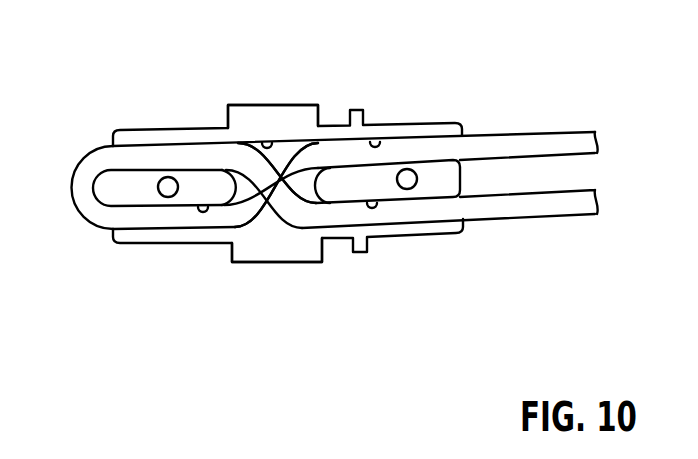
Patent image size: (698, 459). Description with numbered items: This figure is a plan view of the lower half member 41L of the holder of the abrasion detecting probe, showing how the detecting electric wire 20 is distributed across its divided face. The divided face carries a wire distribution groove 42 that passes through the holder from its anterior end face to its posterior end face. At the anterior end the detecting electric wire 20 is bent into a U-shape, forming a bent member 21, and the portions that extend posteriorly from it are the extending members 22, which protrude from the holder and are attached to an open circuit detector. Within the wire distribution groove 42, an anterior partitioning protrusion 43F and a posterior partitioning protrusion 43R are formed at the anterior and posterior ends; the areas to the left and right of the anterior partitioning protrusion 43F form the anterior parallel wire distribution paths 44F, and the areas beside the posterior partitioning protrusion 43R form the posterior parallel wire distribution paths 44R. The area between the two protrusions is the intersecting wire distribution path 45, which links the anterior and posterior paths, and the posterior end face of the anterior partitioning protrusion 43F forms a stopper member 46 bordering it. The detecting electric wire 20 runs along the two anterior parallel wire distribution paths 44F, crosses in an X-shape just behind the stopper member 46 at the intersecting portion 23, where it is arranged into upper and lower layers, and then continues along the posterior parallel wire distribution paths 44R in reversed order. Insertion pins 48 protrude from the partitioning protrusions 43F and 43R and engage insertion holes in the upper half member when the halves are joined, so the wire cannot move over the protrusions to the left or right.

The detecting electric wire 20 is at (582, 90).
The bent member 21 is at (78, 187).
The extending members 22 is at (538, 143).
The intersecting portion 23 is at (272, 183).
The lower half member 41L is at (295, 243).
The wire distribution groove 42 is at (275, 140).
The anterior partitioning protrusion 43F is at (115, 192).
The posterior partitioning protrusion 43R is at (433, 183).
The anterior parallel wire distribution path 44F is at (213, 188).
The posterior parallel wire distribution path 44R is at (383, 193).
The intersecting wire distribution path 45 is at (308, 182).
The stopper member 46 is at (233, 190).
The insertion pins 48 is at (161, 179).